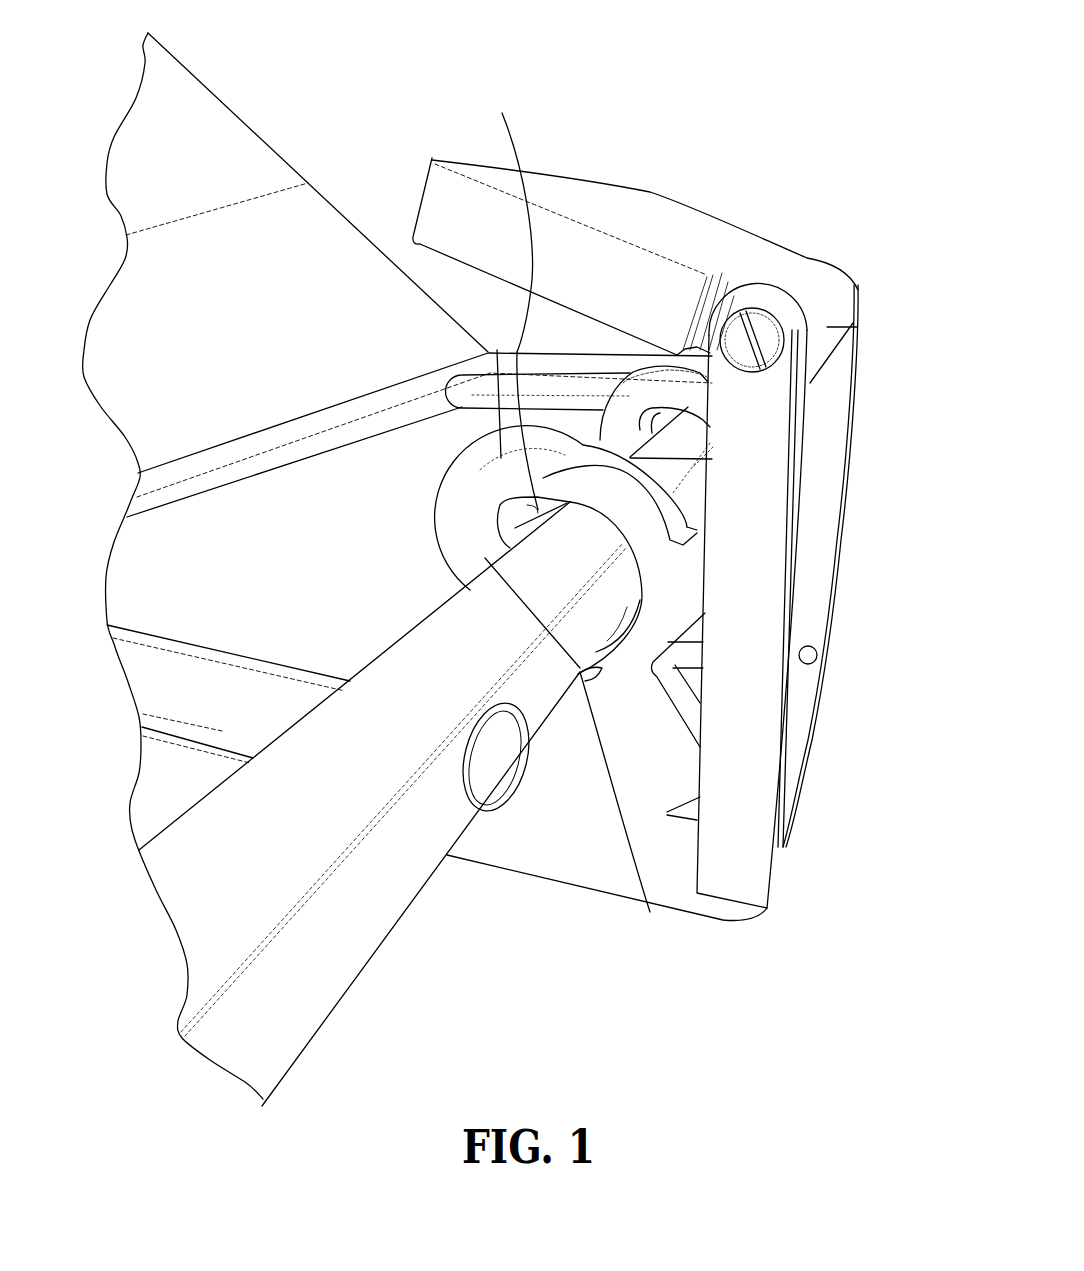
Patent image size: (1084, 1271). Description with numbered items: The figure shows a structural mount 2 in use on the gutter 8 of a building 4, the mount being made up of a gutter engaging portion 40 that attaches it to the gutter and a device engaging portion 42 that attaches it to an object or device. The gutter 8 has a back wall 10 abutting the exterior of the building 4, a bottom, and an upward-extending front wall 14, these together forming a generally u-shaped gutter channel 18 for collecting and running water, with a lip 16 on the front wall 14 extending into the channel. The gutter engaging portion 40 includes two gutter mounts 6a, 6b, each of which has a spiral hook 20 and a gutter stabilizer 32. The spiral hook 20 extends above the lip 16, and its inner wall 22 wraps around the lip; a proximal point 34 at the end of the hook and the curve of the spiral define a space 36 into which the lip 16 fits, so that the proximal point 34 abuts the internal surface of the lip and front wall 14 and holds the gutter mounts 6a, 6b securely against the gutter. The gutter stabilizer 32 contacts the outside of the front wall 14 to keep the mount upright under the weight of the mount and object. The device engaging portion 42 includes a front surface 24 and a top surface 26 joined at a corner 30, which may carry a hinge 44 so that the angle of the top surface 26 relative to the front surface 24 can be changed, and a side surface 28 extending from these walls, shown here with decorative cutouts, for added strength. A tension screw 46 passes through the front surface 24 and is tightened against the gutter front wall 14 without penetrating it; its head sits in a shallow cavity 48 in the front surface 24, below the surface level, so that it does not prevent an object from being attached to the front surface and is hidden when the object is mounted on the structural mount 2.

The structural mount 2 is at (835, 88).
The building 4 is at (323, 228).
The gutter mount 6a is at (638, 545).
The gutter mount 6b is at (693, 397).
The gutter 8 is at (146, 599).
The back wall 10 is at (126, 530).
The front wall 14 is at (294, 1018).
The lip 16 is at (301, 877).
The gutter channel 18 is at (160, 774).
The spiral hook 20 is at (545, 478).
The inner wall 22 is at (640, 537).
The front surface 24 is at (795, 768).
The top surface 26 is at (660, 217).
The side surface 28 is at (598, 845).
The corner 30 is at (837, 293).
The gutter stabilizer 32 is at (543, 742).
The proximal point 34 is at (650, 912).
The space 36 is at (513, 298).
The gutter engaging portion 40 is at (95, 520).
The device engaging portion 42 is at (878, 520).
The hinge 44 is at (763, 335).
The tension screw 46 is at (688, 660).
The shallow cavity 48 is at (817, 662).